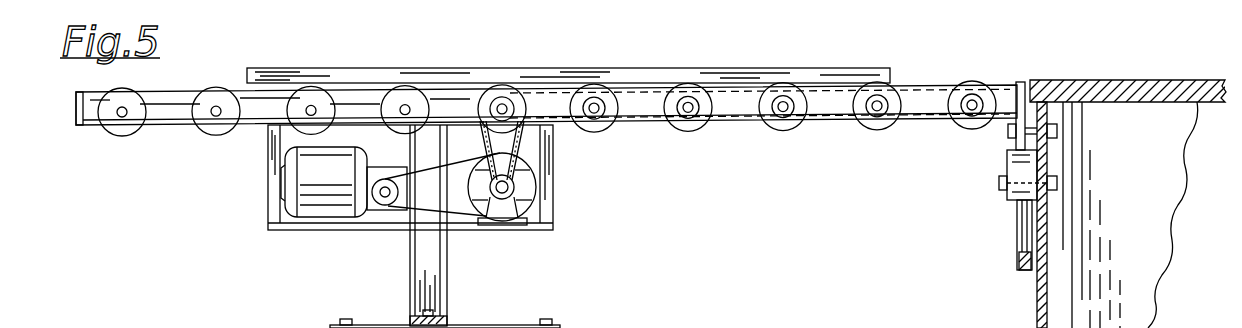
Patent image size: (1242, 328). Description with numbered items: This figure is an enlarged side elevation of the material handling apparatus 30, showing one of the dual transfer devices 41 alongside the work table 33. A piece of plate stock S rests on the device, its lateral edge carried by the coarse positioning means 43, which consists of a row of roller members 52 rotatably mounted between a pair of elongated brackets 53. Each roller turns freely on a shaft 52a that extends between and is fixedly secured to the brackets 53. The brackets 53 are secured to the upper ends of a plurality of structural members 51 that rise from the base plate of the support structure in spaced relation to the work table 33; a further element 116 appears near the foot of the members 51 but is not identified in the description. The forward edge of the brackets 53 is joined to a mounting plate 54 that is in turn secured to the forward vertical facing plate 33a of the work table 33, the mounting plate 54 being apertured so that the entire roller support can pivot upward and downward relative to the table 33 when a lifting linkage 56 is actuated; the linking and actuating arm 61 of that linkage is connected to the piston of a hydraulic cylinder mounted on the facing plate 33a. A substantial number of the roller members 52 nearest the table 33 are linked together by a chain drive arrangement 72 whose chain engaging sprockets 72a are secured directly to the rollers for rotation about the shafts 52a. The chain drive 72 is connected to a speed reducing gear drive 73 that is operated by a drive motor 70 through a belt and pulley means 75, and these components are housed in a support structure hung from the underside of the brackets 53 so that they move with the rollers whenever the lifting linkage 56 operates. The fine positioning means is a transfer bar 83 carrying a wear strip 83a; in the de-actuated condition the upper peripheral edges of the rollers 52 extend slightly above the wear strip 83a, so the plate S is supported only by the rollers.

The material handling apparatus 30 is at (853, 46).
The piece of plate stock S is at (673, 79).
The work table 33 is at (1114, 79).
The forward vertical facing plate 33a is at (1046, 285).
The dual transfer device 41 is at (256, 229).
The coarse positioning means 43 is at (179, 136).
The structural members 51 is at (433, 272).
The roller members 52 is at (122, 136).
The shaft 52a is at (217, 134).
The elongated brackets 53 is at (178, 102).
The mounting plate 54 is at (1022, 81).
The lifting linkage 56 is at (1011, 221).
The linking and actuating arm 61 is at (1022, 270).
The drive motor 70 is at (338, 181).
The chain drive arrangement 72 is at (272, 193).
The chain engaging sprockets 72a is at (525, 142).
The speed reducing gear drive 73 is at (524, 186).
The belt and pulley means 75 is at (386, 206).
The transfer bar 83 is at (648, 327).
The wear strip 83a is at (719, 327).
The base plate 116 is at (512, 326).